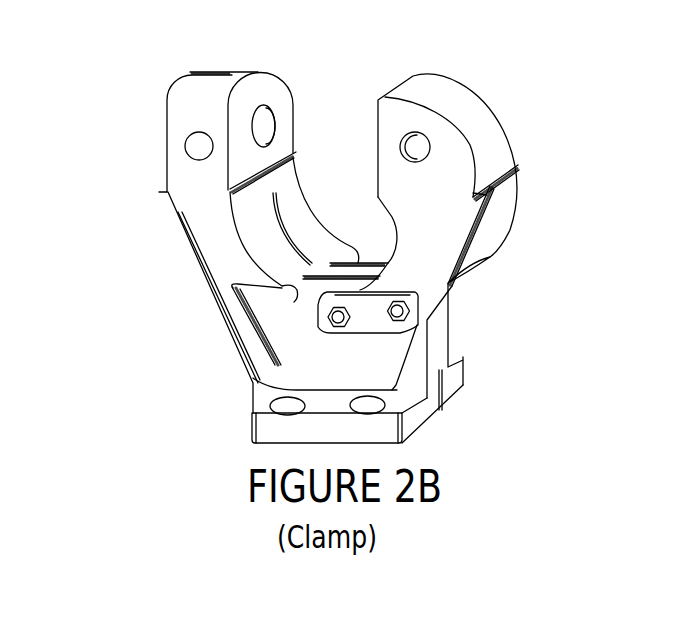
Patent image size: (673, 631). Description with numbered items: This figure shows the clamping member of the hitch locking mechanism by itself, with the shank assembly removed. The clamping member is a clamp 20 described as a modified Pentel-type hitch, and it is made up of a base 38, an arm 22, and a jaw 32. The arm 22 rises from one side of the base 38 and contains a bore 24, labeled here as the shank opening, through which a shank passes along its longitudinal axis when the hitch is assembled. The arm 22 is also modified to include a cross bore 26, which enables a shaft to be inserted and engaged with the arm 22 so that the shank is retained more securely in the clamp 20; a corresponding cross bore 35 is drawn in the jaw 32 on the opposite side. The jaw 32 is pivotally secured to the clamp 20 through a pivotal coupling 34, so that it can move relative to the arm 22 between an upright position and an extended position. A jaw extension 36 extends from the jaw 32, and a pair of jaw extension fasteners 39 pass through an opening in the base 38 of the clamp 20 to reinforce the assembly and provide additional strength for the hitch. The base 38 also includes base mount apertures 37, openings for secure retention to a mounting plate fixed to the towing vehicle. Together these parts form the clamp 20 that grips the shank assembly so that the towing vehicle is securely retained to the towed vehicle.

The clamp 20 is at (329, 263).
The arm 22 is at (197, 213).
The bore 24 is at (261, 112).
The cross bore 26 is at (194, 152).
The jaw 32 is at (462, 172).
The pivotal coupling 34 is at (409, 325).
The cross bore 35 is at (411, 130).
The jaw extension 36 is at (340, 341).
The base mount apertures 37 is at (358, 403).
The base 38 is at (258, 408).
The jaw extension fasteners 39 is at (342, 315).